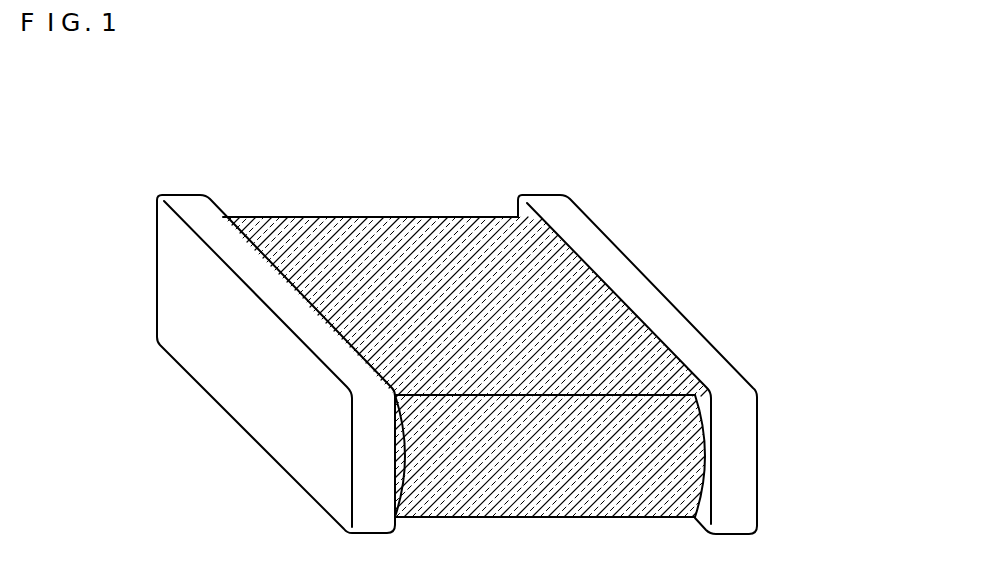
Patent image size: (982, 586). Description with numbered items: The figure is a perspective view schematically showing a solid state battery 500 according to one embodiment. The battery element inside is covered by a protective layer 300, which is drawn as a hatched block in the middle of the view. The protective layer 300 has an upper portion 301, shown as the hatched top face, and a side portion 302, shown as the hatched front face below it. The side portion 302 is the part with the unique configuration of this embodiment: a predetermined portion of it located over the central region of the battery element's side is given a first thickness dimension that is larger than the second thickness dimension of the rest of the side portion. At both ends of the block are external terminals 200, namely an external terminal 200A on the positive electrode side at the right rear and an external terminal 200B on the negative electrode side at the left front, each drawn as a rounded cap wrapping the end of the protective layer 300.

The solid state battery 500 is at (677, 188).
The protective layer 300 is at (830, 337).
The upper portion/lower portion of protective layer 301 is at (641, 375).
The side portion of protective layer 302 is at (660, 436).
The external terminal 200 is at (464, 335).
The external terminal on positive electrode side 200A is at (625, 268).
The external terminal on negative electrode side 200B is at (190, 206).